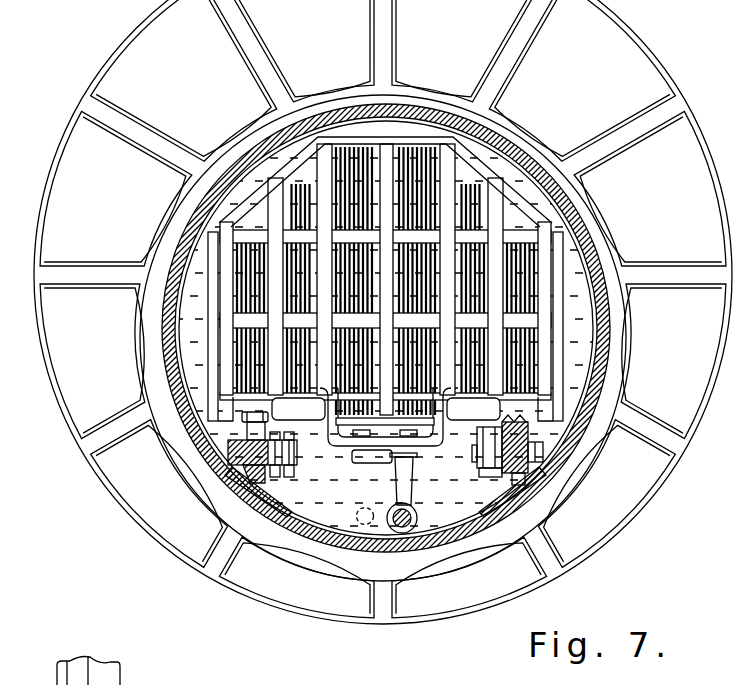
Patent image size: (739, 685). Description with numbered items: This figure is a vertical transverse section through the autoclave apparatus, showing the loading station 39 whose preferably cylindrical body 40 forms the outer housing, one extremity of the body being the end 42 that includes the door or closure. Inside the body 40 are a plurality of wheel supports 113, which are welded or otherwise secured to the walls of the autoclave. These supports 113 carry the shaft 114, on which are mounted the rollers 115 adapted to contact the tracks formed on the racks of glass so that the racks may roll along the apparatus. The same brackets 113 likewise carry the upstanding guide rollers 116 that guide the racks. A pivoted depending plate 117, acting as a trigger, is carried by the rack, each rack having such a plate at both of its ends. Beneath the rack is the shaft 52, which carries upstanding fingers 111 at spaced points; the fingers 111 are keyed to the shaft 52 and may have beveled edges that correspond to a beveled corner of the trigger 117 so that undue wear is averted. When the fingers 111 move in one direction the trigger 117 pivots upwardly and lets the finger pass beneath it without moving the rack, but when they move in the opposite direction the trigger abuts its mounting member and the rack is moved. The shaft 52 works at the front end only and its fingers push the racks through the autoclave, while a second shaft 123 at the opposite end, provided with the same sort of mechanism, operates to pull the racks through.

The loading station 39 is at (509, 139).
The cylindrical body 40 is at (246, 141).
The end 42 is at (423, 96).
The shaft 52 is at (416, 518).
The upstanding fingers 111 is at (406, 479).
The wheel supports 113 is at (537, 488).
The shaft 114 is at (243, 472).
The rollers 115 is at (281, 480).
The upstanding guide rollers 116 is at (243, 419).
The pivoted depending plate 117 is at (383, 465).
The second shaft 123 is at (356, 517).